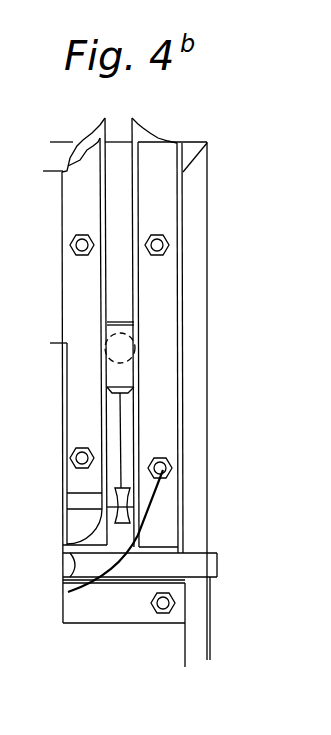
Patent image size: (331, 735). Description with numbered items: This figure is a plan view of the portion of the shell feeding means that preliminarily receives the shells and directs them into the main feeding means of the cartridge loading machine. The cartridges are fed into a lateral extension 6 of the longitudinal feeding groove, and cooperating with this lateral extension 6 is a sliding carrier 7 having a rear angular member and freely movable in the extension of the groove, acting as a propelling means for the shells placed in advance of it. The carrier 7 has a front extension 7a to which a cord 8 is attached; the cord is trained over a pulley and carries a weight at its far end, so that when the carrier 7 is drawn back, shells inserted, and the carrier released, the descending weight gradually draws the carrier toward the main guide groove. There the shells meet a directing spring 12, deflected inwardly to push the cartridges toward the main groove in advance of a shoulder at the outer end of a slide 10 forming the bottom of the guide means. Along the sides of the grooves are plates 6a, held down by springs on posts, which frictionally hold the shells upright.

The lateral extension of the feeding groove 6 is at (118, 222).
The plate 6a is at (82, 313).
The sliding carrier 7 is at (135, 320).
The front extension 7a is at (134, 393).
The cord 8 is at (123, 443).
The slide 10 is at (173, 562).
The directing spring 12 is at (142, 510).